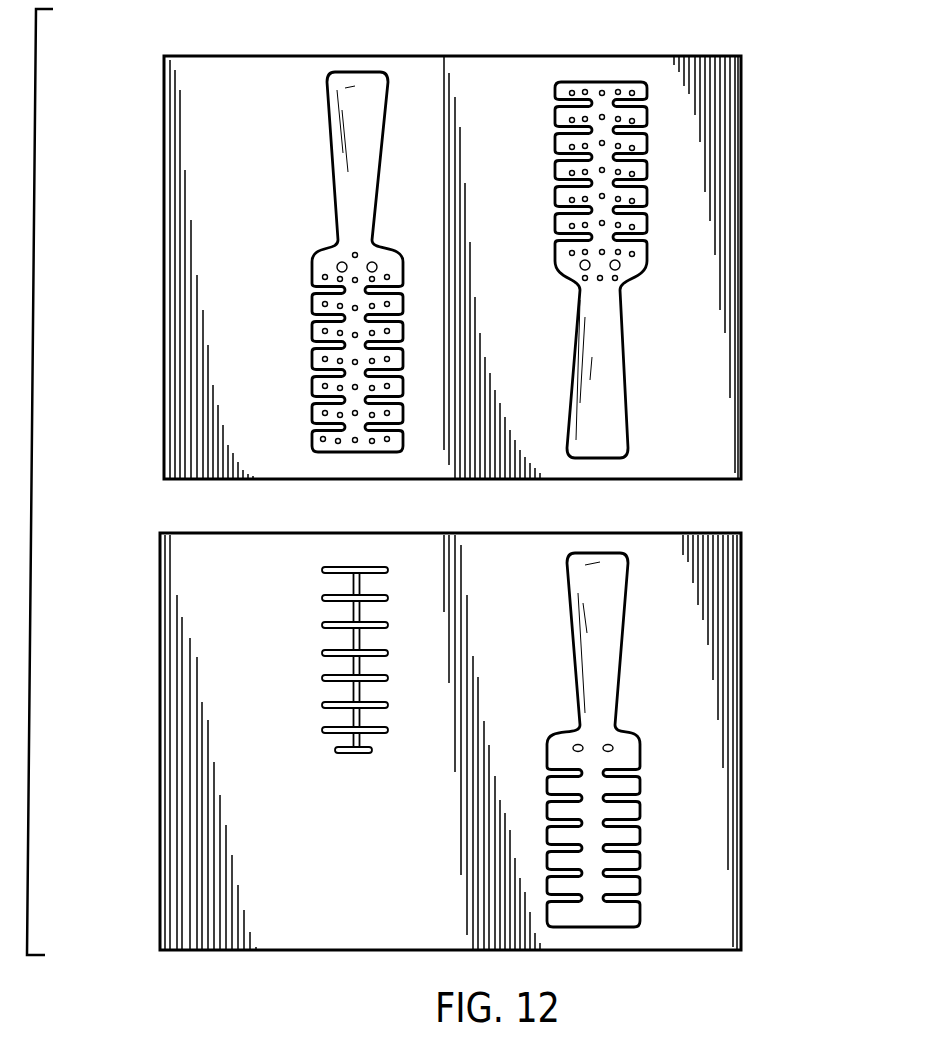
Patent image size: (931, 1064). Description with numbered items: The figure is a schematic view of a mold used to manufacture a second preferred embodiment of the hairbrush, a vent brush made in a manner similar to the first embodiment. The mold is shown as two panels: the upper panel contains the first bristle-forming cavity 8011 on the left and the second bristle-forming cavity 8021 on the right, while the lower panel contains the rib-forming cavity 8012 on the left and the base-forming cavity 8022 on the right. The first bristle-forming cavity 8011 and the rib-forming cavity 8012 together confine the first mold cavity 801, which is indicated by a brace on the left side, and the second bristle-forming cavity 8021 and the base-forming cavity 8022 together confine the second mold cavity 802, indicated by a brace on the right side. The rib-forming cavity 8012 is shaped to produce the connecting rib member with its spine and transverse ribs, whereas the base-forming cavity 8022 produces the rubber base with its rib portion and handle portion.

The first mold cavity 801 is at (120, 383).
The first bristle-forming cavity 8011 is at (255, 363).
The rib-forming cavity 8012 is at (318, 603).
The second mold cavity 802 is at (826, 587).
The second bristle-forming cavity 8021 is at (603, 332).
The base-forming cavity 8022 is at (605, 605).